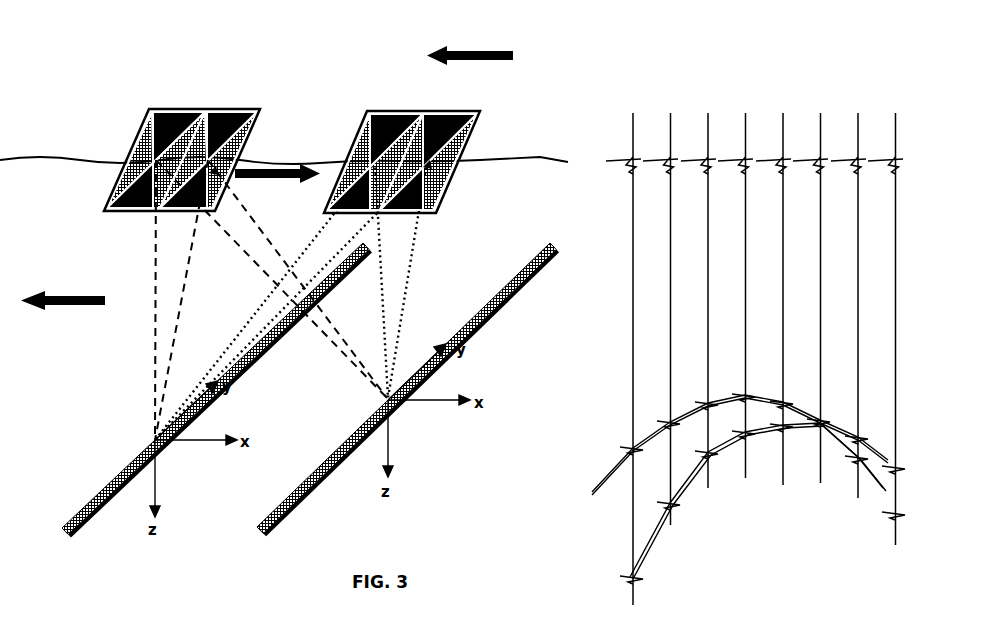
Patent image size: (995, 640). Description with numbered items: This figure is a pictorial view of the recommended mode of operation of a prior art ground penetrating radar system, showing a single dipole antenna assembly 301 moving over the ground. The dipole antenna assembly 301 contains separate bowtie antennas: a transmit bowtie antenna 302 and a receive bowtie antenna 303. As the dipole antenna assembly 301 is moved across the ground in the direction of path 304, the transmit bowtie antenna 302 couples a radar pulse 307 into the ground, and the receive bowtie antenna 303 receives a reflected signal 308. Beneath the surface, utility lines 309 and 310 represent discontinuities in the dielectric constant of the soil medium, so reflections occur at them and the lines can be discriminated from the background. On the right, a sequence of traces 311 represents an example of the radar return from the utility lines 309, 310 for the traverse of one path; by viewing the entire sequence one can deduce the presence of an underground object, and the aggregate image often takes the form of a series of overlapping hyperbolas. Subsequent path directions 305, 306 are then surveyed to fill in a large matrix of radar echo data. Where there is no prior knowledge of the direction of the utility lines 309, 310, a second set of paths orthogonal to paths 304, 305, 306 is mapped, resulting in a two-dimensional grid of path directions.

The dipole antenna assembly 301 is at (170, 112).
The transmit bowtie antenna 302 is at (160, 138).
The receive bowtie antenna 303 is at (222, 128).
The path 304 is at (270, 157).
The subsequent path direction 305 is at (490, 50).
The subsequent path direction 306 is at (70, 307).
The radar pulse 307 is at (156, 250).
The reflected signal 308 is at (190, 282).
The utility line 309 is at (120, 468).
The utility line 310 is at (537, 262).
The sequence of traces 311 is at (770, 98).